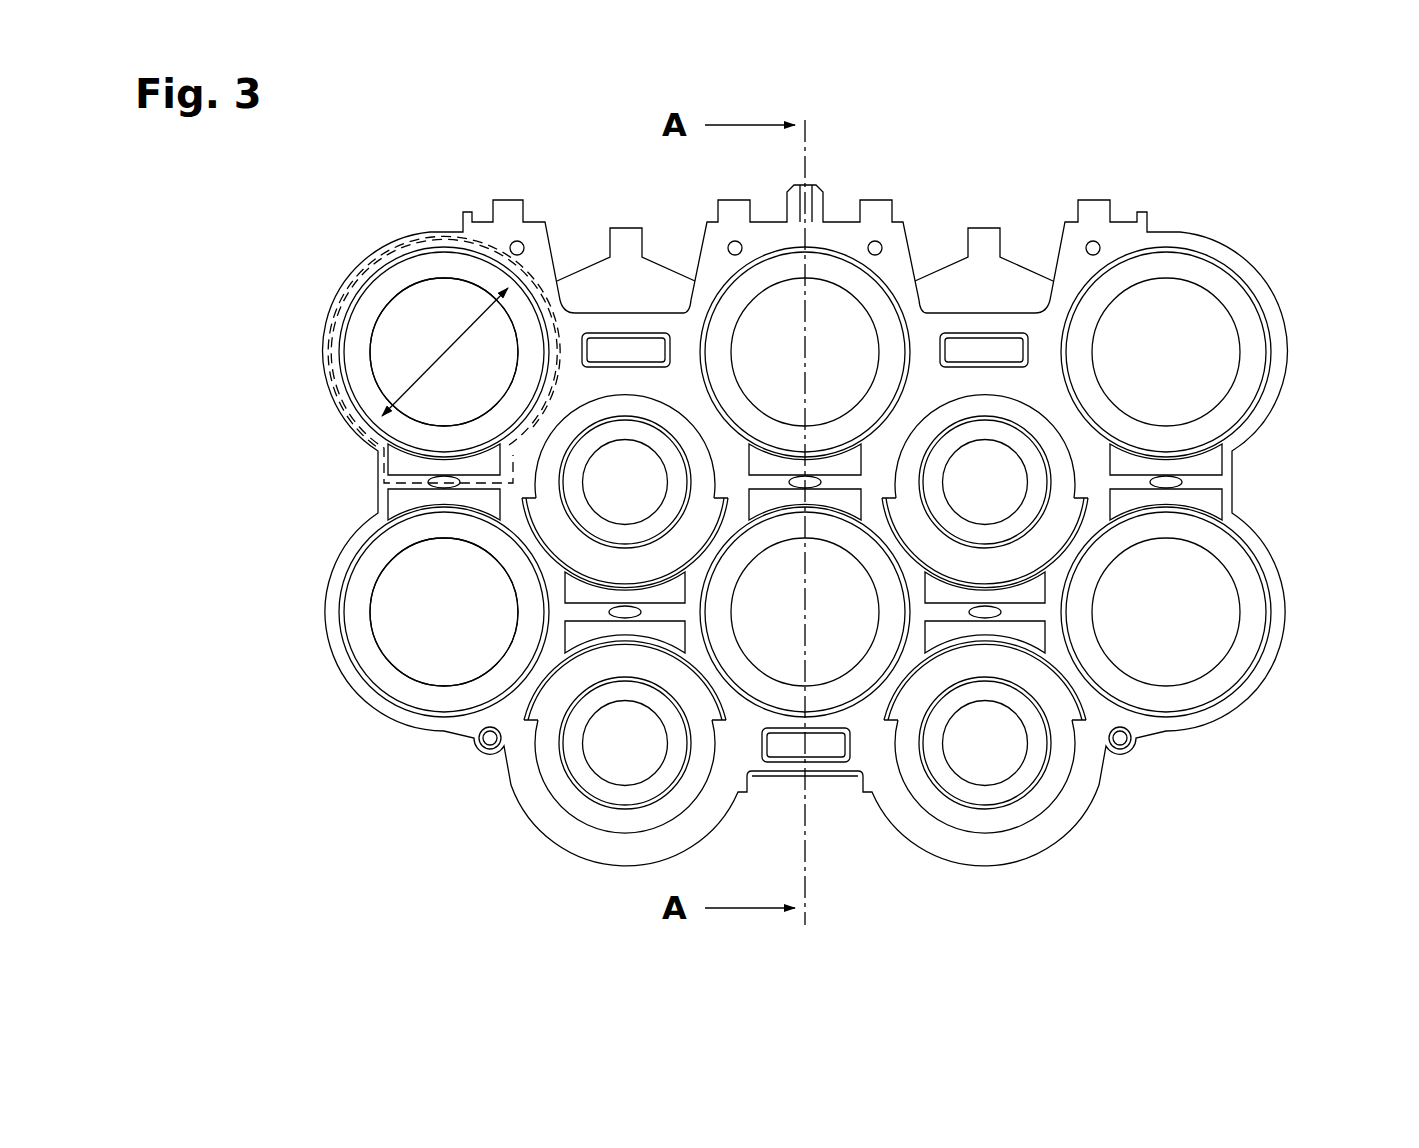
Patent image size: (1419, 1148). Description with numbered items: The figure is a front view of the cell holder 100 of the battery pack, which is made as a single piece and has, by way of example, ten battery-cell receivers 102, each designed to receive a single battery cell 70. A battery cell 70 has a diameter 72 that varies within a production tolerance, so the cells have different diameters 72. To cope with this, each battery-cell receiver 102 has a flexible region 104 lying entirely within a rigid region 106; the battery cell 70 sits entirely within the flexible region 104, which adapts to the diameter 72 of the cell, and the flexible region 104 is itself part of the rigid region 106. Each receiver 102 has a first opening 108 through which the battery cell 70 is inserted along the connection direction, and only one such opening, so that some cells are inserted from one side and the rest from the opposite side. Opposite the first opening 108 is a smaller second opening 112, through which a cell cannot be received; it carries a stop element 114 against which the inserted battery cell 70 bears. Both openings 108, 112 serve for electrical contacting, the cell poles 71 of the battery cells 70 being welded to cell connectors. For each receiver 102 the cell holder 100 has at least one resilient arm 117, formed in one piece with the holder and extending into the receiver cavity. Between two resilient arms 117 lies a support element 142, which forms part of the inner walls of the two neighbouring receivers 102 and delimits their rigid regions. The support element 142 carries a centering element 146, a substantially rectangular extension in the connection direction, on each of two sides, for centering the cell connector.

The cell holder 100 is at (847, 240).
The battery-cell receiver 102 is at (376, 350).
The flexible region 104 is at (372, 250).
The rigid region 106 is at (400, 245).
The first opening 108 is at (368, 318).
The second opening 112 is at (627, 422).
The stop element 114 is at (512, 766).
The resilient arm 117 is at (1210, 470).
The support element 142 is at (405, 490).
The centering element 146 is at (396, 476).
The battery cell 70 is at (440, 665).
The cell pole 71 is at (450, 300).
The diameter 72 is at (383, 412).